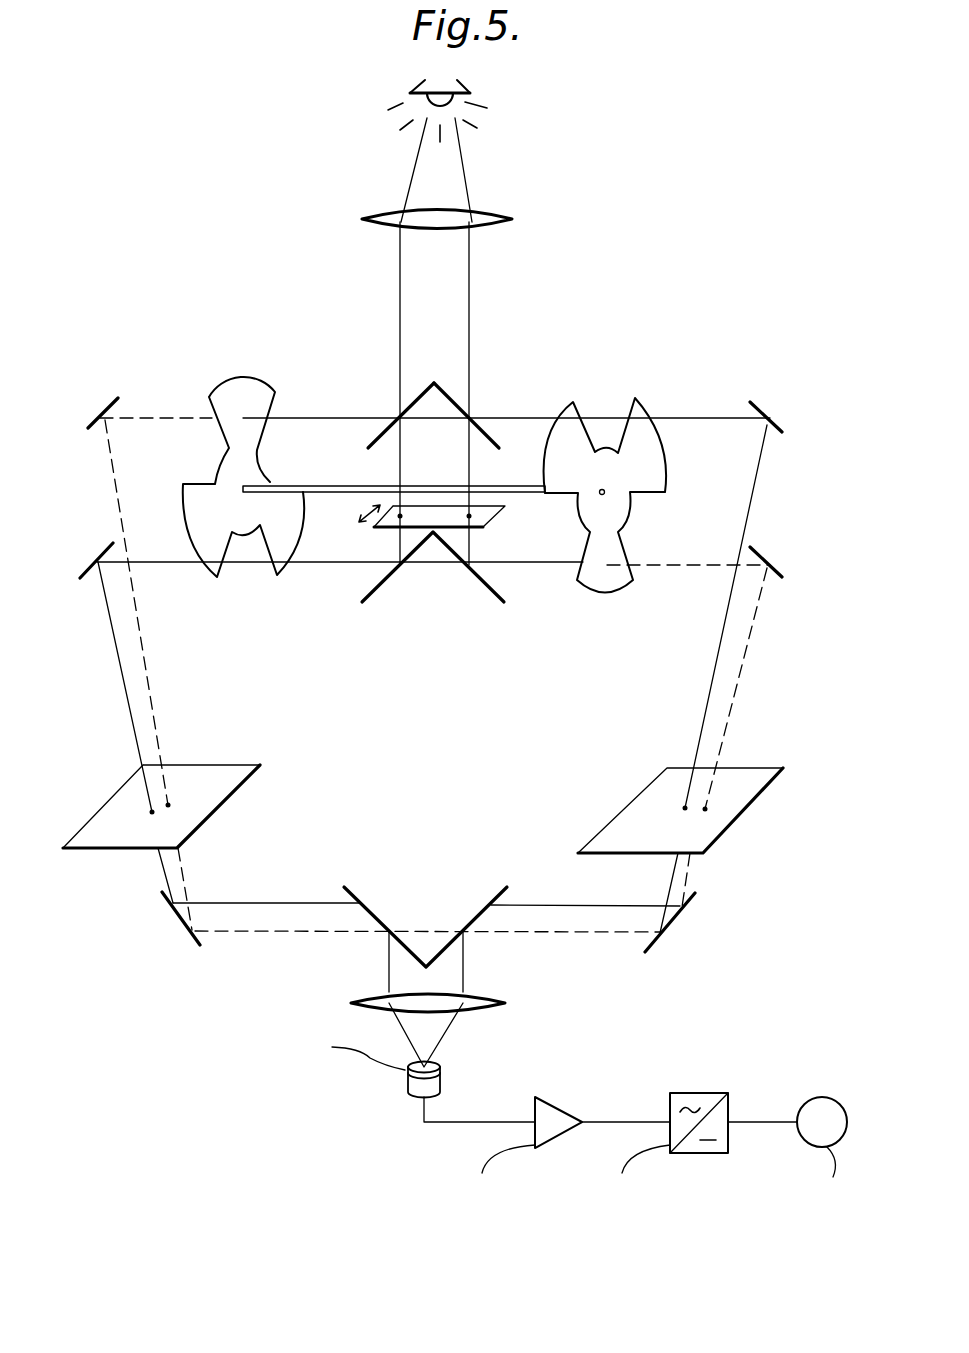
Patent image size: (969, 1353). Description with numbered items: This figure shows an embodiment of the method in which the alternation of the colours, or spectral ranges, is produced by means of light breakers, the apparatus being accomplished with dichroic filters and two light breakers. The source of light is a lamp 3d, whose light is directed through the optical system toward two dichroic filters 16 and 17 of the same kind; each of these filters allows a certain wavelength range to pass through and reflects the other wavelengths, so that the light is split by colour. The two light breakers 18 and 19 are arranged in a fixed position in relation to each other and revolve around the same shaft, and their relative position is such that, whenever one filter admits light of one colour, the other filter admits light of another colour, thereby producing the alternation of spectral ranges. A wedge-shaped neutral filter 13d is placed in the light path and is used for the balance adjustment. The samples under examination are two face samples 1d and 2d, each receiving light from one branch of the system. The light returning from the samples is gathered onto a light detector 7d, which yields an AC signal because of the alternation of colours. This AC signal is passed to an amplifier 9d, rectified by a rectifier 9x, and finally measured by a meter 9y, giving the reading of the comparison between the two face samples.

The lamp 3d is at (457, 82).
The dichroic filter 16 is at (408, 405).
The dichroic filter 17 is at (483, 432).
The light breaker 18 is at (238, 390).
The light breaker 19 is at (642, 412).
The wedge-shaped neutral filter 13d is at (490, 513).
The face sample 1d is at (183, 822).
The face sample 2d is at (715, 822).
The light detector 7d is at (407, 1081).
The amplifier 9d is at (561, 1117).
The rectifier 9x is at (683, 1092).
The meter 9y is at (810, 1097).